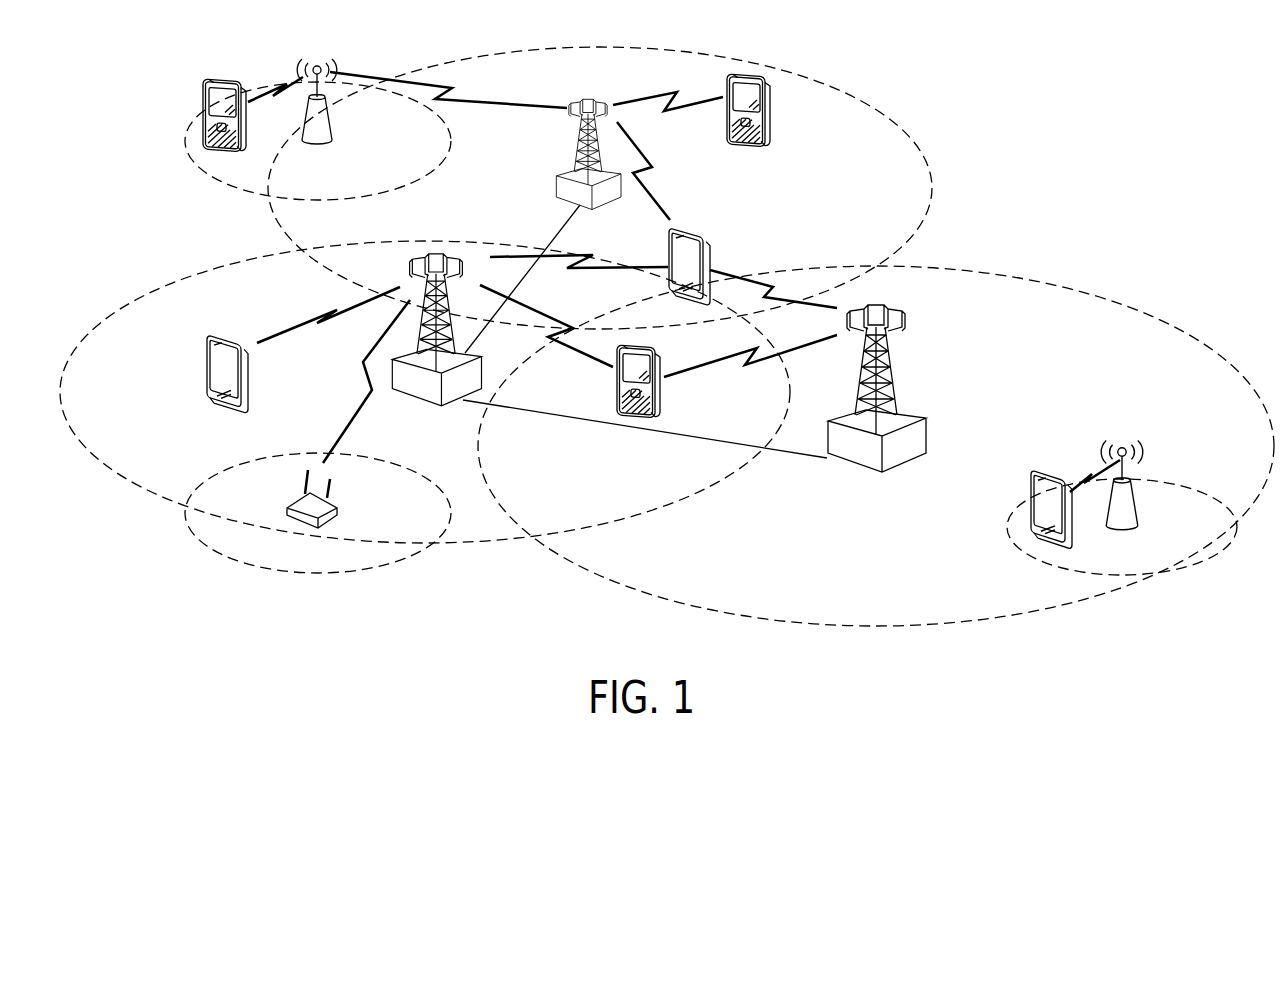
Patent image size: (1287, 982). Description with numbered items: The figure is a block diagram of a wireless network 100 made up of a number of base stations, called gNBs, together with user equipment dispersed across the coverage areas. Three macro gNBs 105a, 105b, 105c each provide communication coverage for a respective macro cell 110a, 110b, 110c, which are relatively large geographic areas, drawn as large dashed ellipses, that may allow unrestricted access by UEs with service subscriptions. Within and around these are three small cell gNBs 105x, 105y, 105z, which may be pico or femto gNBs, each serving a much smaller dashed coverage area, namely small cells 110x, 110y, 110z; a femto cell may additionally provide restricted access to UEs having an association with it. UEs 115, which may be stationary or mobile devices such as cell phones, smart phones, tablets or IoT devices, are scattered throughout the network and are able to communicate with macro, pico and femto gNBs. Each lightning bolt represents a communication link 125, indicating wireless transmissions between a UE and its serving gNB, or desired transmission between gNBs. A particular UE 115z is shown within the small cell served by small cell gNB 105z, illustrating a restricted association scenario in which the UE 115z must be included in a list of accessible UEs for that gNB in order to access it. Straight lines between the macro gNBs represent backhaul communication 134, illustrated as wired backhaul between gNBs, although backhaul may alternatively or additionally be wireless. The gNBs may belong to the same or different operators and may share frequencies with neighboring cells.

The wireless network 100 is at (1005, 118).
The macro gNB 105a is at (440, 406).
The macro gNB 105b is at (560, 197).
The macro gNB 105c is at (905, 472).
The small cell gNB 105x is at (340, 508).
The small cell gNB 105y is at (333, 141).
The small cell gNB 105z is at (1140, 502).
The macro cell 110a is at (153, 283).
The macro cell 110b is at (750, 62).
The macro cell 110c is at (1070, 287).
The small cell 110x is at (243, 577).
The small cell 110y is at (207, 175).
The small cell 110z is at (1198, 577).
The UE 115 is at (203, 95).
The UE 115z is at (1030, 492).
The communication link 125 is at (275, 84).
The backhaul communication 134 is at (553, 237).